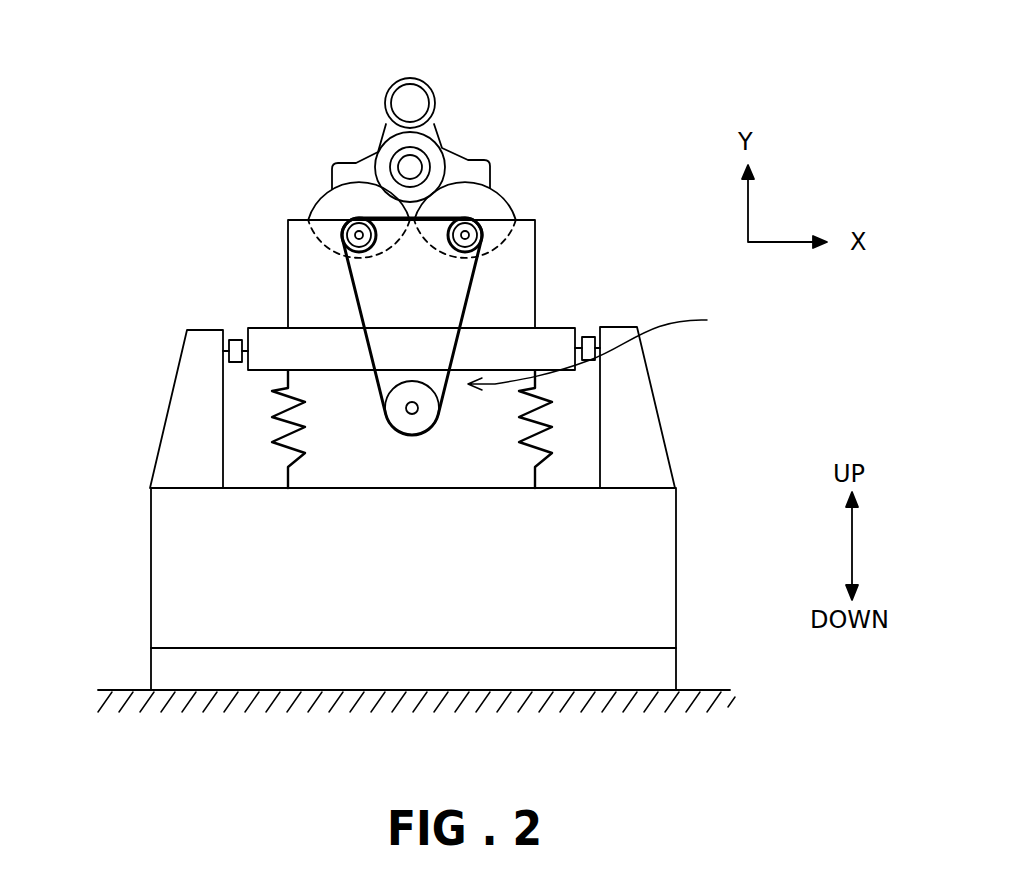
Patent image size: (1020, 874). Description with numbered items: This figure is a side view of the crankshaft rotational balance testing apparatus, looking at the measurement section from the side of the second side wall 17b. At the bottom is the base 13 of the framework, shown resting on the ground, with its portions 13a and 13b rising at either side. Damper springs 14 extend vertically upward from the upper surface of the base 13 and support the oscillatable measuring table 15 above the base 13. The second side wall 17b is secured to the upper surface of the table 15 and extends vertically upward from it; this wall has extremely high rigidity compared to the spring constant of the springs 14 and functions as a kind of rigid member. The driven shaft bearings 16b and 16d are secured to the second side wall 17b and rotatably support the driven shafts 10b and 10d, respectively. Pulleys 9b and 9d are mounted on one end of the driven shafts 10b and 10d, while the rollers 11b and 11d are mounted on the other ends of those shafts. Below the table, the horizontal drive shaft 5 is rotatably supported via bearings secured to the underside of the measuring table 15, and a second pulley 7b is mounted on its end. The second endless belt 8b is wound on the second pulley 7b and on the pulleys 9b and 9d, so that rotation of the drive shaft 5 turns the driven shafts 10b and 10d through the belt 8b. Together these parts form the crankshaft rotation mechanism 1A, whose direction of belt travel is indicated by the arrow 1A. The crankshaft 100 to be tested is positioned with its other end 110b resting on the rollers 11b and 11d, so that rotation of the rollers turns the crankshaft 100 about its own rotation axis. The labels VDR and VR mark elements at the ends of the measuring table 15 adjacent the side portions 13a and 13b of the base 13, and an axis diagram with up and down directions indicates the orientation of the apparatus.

The crankshaft 100 is at (447, 54).
The other end of crankshaft 110b is at (437, 137).
The roller 11b is at (342, 162).
The roller 11d is at (494, 186).
The driven shaft bearing 16b is at (340, 224).
The driven shaft bearing 16d is at (484, 228).
The pulley 9b is at (357, 241).
The pulley 9d is at (463, 241).
The driven shaft 10b is at (366, 248).
The driven shaft 10d is at (472, 250).
The second side wall 17b is at (527, 268).
The second endless belt 8b is at (470, 346).
The measuring table 15 is at (555, 337).
The left displacement sensor VDR is at (235, 340).
The right displacement sensor VR is at (588, 336).
The crankshaft rotation mechanism 1A is at (605, 350).
The drive shaft 5 is at (419, 409).
The second pulley 7b is at (397, 425).
The damper springs 14 is at (273, 455).
The base 13 is at (655, 575).
The left support post 13a is at (183, 415).
The right support post 13b is at (645, 413).